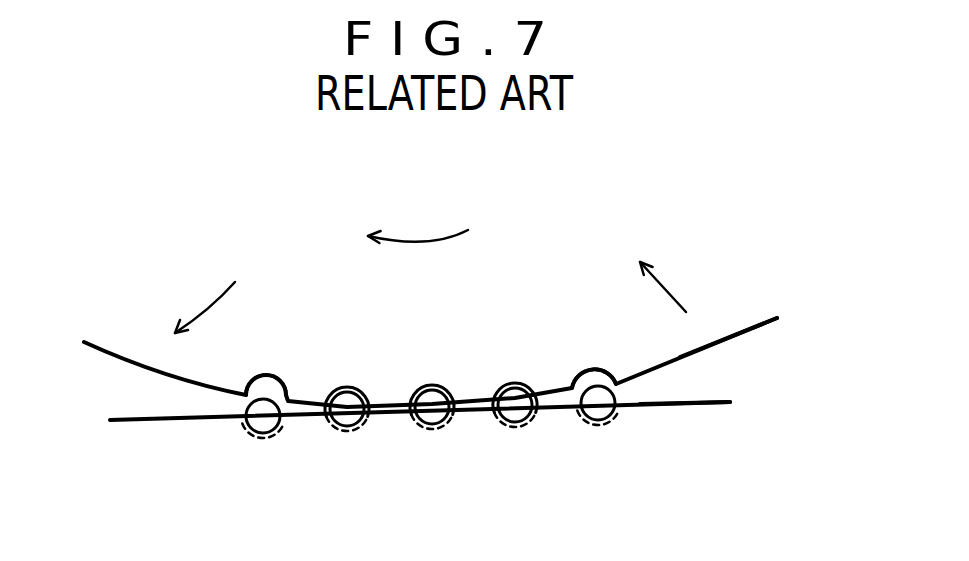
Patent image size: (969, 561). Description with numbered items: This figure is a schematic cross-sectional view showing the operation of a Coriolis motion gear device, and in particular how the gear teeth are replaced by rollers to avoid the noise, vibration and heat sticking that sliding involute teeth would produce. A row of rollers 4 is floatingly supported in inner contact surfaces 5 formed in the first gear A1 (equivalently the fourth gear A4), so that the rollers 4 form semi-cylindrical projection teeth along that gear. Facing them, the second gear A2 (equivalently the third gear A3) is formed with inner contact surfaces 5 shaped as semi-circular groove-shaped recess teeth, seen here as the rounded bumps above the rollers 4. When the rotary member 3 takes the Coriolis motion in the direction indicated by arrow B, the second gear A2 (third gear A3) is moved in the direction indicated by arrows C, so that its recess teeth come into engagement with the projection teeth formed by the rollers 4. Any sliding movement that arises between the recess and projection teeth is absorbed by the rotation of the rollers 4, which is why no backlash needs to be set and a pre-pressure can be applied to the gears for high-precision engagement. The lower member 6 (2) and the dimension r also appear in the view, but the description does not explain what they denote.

The rotary member 3 is at (110, 337).
The roller 4 is at (247, 412).
The inner contact surface 5 is at (275, 377).
The lower rail 6 is at (395, 471).
The rail 2 is at (152, 420).
The first gear A1 is at (714, 436).
The fourth gear A4 is at (730, 386).
The second gear A2 is at (778, 295).
The third gear A3 is at (778, 342).
The arrow B is at (428, 240).
The arrows C is at (203, 297).
The radius of protrusion r is at (583, 366).